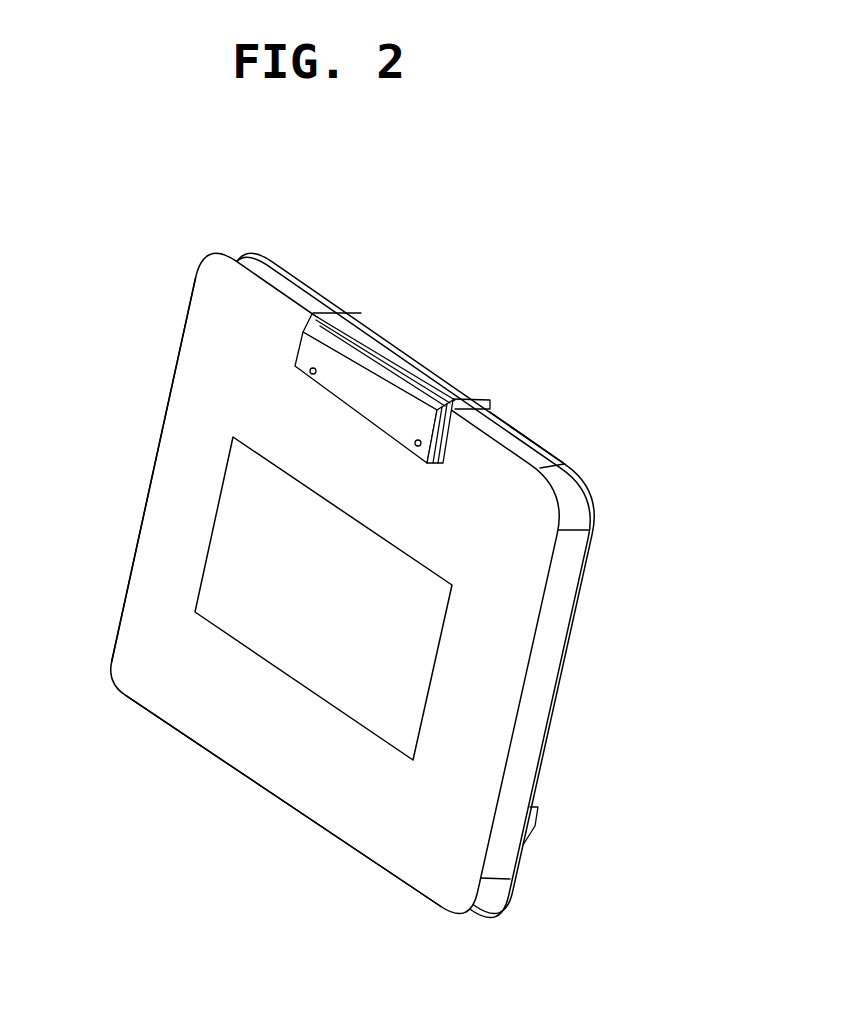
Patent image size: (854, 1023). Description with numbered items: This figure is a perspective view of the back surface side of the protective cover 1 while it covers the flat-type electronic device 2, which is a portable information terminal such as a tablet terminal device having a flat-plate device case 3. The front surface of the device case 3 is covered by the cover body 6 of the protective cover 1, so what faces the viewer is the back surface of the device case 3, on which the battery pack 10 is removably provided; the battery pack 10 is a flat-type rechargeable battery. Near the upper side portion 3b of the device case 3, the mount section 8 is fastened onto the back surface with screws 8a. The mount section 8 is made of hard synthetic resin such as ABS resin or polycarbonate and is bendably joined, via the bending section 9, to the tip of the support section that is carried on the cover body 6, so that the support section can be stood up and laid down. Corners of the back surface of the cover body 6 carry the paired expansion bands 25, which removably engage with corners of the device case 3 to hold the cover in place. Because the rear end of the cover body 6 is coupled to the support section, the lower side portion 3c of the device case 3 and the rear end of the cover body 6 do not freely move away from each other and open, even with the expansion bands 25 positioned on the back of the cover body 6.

The protective cover 1 is at (598, 573).
The electronic device 2 is at (150, 452).
The device case 3 is at (160, 583).
The upper side portion 3b is at (512, 433).
The lower side portion 3c is at (330, 833).
The cover body 6 is at (560, 665).
The mount section 8 is at (368, 392).
The screws 8a is at (305, 371).
The bending section 9 is at (435, 388).
The battery pack 10 is at (278, 643).
The expansion bands 25 is at (537, 826).